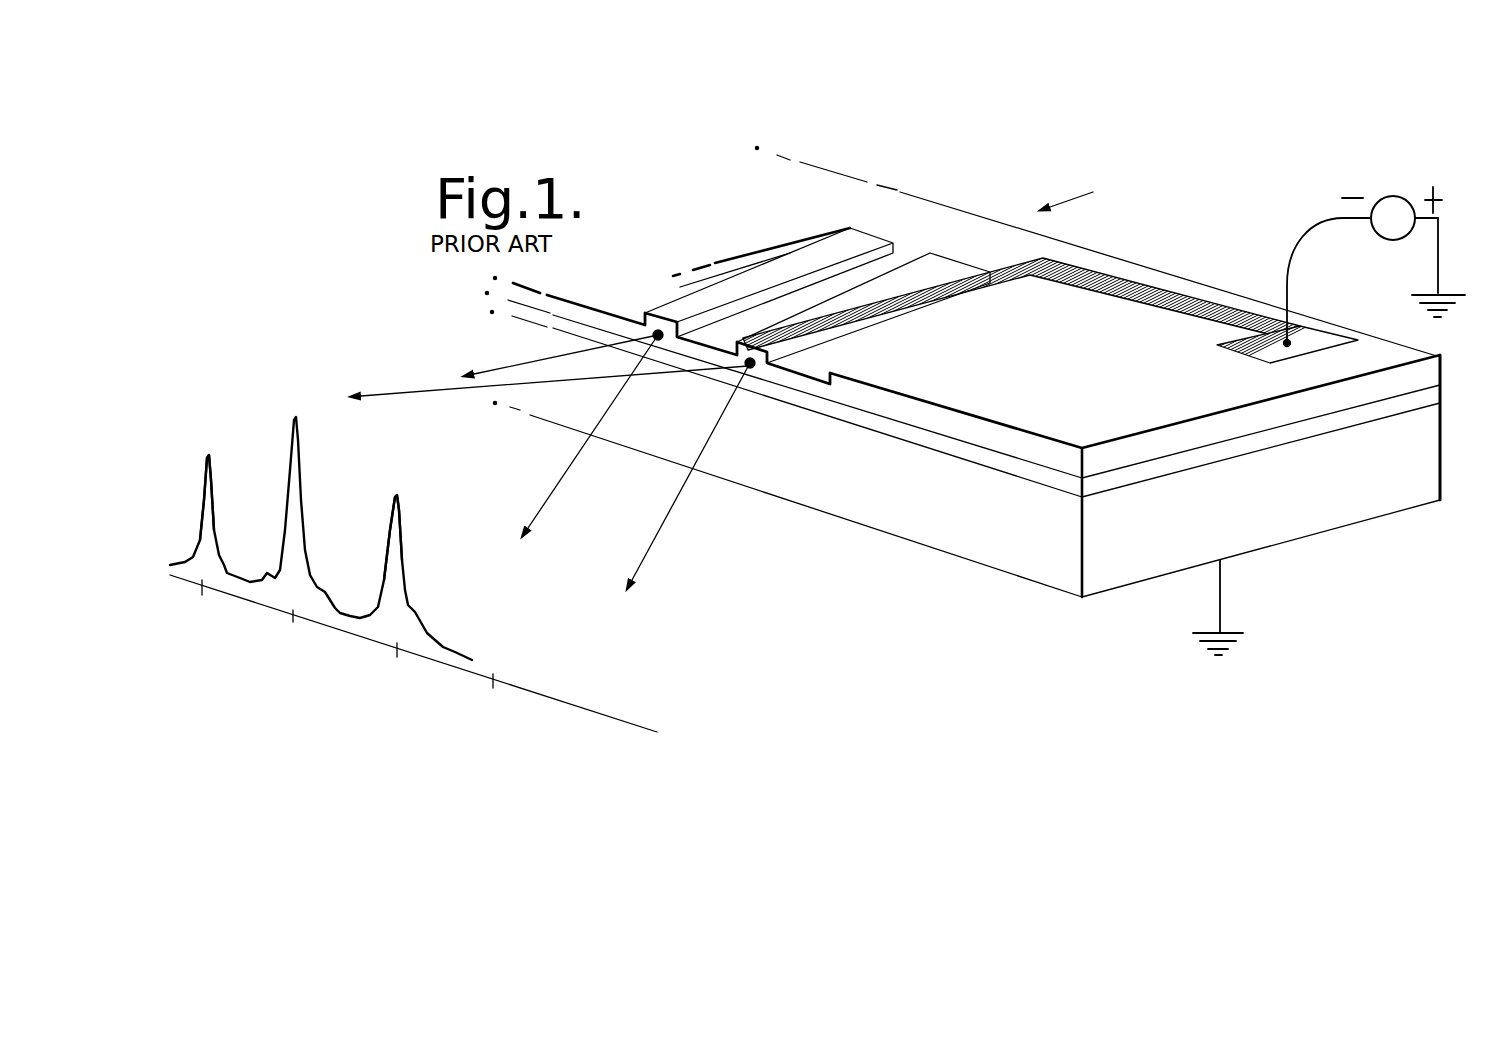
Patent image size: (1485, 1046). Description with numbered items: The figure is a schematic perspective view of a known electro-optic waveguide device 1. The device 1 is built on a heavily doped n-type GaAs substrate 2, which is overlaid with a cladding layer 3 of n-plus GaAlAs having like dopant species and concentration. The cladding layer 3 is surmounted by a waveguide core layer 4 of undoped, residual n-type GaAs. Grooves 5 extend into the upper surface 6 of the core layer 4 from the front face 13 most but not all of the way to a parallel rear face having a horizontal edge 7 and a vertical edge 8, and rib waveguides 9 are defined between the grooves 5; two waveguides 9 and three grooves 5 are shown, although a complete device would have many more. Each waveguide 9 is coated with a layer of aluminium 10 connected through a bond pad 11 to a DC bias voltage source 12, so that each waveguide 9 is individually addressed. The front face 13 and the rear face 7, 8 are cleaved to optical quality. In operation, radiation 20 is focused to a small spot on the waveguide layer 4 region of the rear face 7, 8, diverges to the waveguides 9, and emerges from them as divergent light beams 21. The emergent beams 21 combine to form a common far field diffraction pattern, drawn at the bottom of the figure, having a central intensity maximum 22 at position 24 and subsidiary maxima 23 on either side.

The electro-optic waveguide device 1 is at (953, 604).
The substrate 2 is at (1273, 522).
The cladding layer 3 is at (1405, 402).
The waveguide core layer 4 is at (1327, 402).
The grooves 5 is at (907, 282).
The upper surface 6 is at (1087, 388).
The horizontal edge of rear face 7 is at (1183, 277).
The vertical edge of rear face 8 is at (1450, 476).
The rib waveguides 9 is at (647, 320).
The layer of aluminium 10 is at (987, 283).
The bond pad 11 is at (1312, 343).
The DC bias voltage source 12 is at (1388, 196).
The front face 13 is at (900, 507).
The radiation 20 is at (1093, 192).
The emergent light beams 21 is at (407, 393).
The central intensity maximum 22 is at (295, 448).
The subsidiary maxima 23 is at (213, 497).
The position of central maximum 24 is at (272, 620).